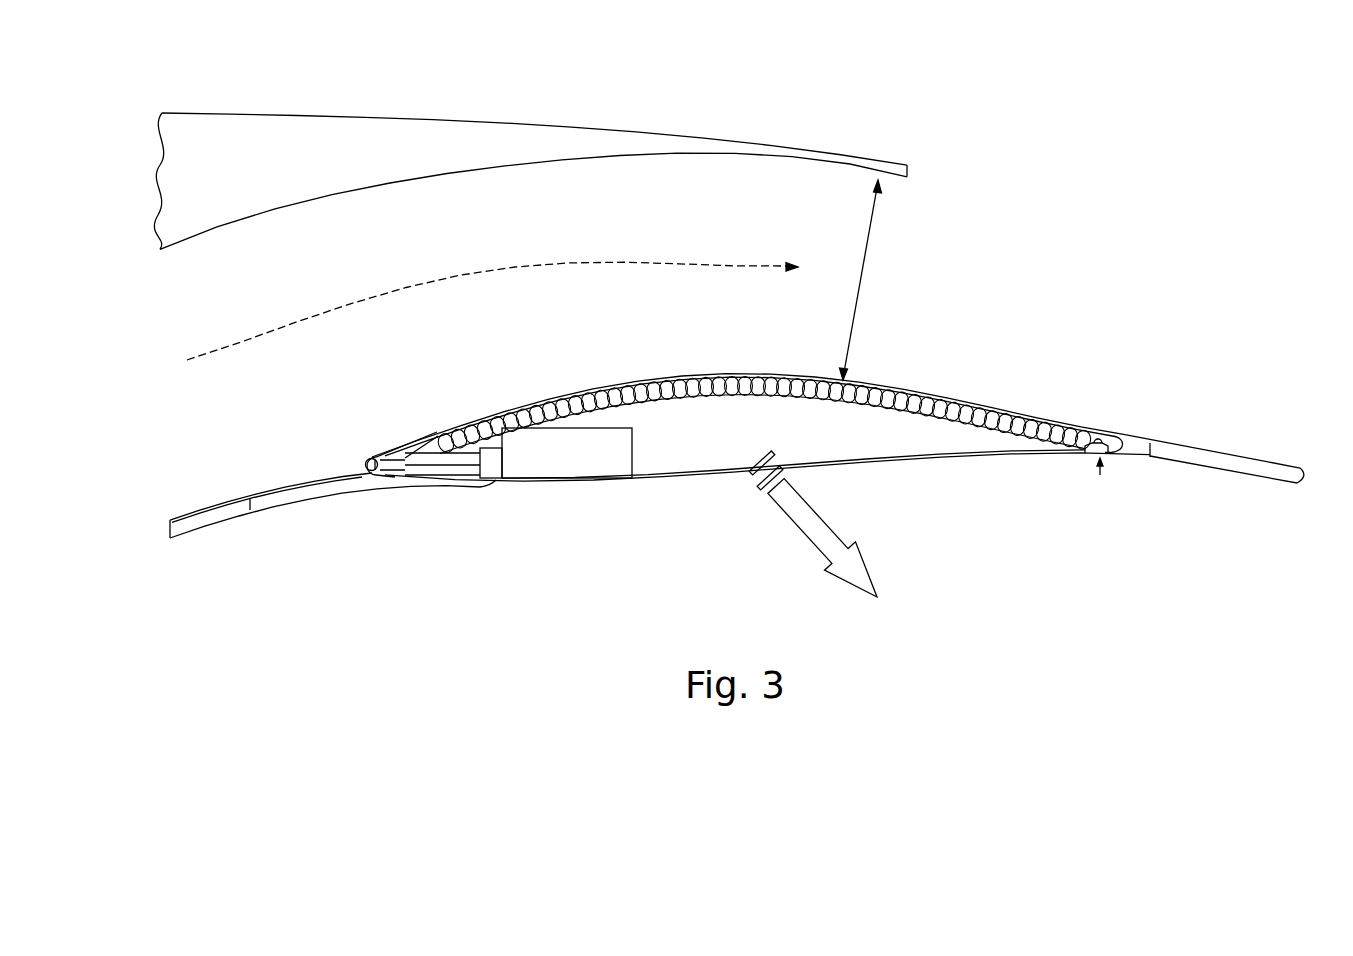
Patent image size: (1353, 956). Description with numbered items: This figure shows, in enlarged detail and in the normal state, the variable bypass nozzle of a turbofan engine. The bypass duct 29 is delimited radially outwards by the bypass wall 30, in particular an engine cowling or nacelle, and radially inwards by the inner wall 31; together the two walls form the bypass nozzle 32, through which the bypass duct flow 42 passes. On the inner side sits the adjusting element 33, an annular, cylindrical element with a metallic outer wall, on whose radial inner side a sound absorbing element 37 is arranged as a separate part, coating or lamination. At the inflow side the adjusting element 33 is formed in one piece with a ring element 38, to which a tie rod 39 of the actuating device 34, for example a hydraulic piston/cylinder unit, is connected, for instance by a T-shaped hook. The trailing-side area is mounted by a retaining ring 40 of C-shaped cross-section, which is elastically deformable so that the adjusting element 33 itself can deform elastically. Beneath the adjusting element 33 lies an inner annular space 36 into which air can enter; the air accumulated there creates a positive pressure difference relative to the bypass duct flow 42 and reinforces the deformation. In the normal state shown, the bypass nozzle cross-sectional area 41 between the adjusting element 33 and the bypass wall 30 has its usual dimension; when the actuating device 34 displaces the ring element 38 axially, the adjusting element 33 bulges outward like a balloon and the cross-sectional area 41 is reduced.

The bypass duct 29 is at (413, 244).
The bypass wall 30 is at (781, 152).
The inner wall 31 is at (250, 513).
The bypass nozzle 32 is at (888, 327).
The adjusting element 33 is at (750, 377).
The actuating device 34 is at (587, 463).
The inner annular space 36 is at (930, 445).
The sound absorbing element 37 is at (973, 410).
The ring element 38 is at (413, 433).
The tie rod 39 is at (440, 462).
The retaining ring 40 is at (1123, 435).
The bypass nozzle cross-sectional area 41 is at (872, 223).
The bypass duct flow 42 is at (688, 262).